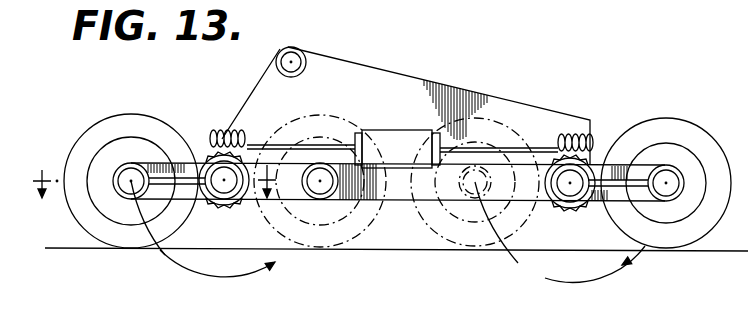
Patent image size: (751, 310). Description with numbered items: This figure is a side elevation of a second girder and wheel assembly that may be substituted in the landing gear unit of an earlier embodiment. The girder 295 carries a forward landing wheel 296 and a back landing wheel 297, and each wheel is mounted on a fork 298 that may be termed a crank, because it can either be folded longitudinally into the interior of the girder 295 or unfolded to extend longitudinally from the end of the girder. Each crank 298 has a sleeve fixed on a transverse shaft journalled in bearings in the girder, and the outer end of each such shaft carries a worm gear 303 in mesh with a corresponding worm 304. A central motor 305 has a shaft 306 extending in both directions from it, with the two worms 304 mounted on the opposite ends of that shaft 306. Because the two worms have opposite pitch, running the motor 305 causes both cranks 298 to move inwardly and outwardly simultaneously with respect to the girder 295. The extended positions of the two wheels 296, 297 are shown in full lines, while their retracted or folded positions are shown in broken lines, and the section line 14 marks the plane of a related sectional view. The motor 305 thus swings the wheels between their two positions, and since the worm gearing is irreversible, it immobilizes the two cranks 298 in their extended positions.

The girder 295 is at (418, 74).
The forward landing wheel 296 is at (157, 124).
The back landing wheel 297 is at (688, 122).
The fork 298 is at (190, 158).
The worm gear 303 is at (222, 207).
The worm 304 is at (259, 144).
The central motor 305 is at (386, 130).
The shaft 306 is at (291, 146).
The section line 14- 14 is at (167, 174).